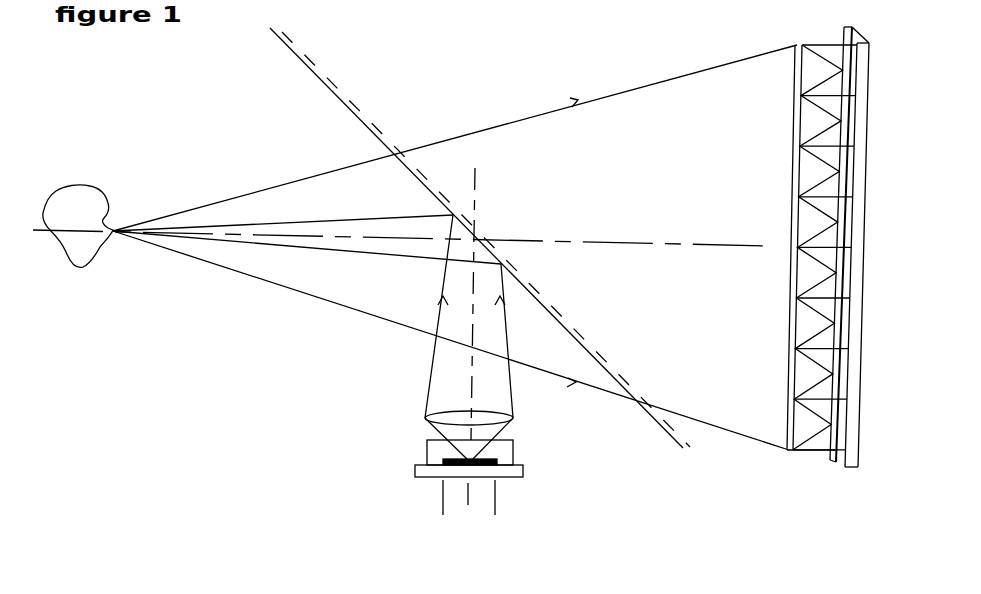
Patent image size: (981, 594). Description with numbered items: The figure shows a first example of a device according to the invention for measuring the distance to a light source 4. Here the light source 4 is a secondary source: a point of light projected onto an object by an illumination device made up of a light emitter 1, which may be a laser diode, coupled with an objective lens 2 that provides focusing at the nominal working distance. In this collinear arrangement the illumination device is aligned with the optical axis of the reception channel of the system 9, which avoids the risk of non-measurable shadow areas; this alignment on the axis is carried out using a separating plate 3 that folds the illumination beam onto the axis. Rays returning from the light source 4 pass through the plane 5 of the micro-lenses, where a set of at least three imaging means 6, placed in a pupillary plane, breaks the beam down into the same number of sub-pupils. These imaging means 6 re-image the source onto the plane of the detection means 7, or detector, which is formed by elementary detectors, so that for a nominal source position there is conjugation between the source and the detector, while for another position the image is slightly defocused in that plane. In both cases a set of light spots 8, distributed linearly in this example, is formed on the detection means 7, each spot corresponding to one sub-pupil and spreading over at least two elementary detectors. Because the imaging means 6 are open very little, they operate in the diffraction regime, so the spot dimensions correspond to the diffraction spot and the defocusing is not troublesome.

The light emitter 1 is at (424, 453).
The objective lens 2 is at (419, 409).
The separating plate 3 is at (294, 50).
The light source 4 is at (118, 221).
The plane of the micro-lenses 5 is at (781, 455).
The imaging means 6 is at (791, 177).
The detection means 7 is at (829, 463).
The light spots 8 is at (836, 324).
The optical axis of the reception channel 9 is at (636, 241).